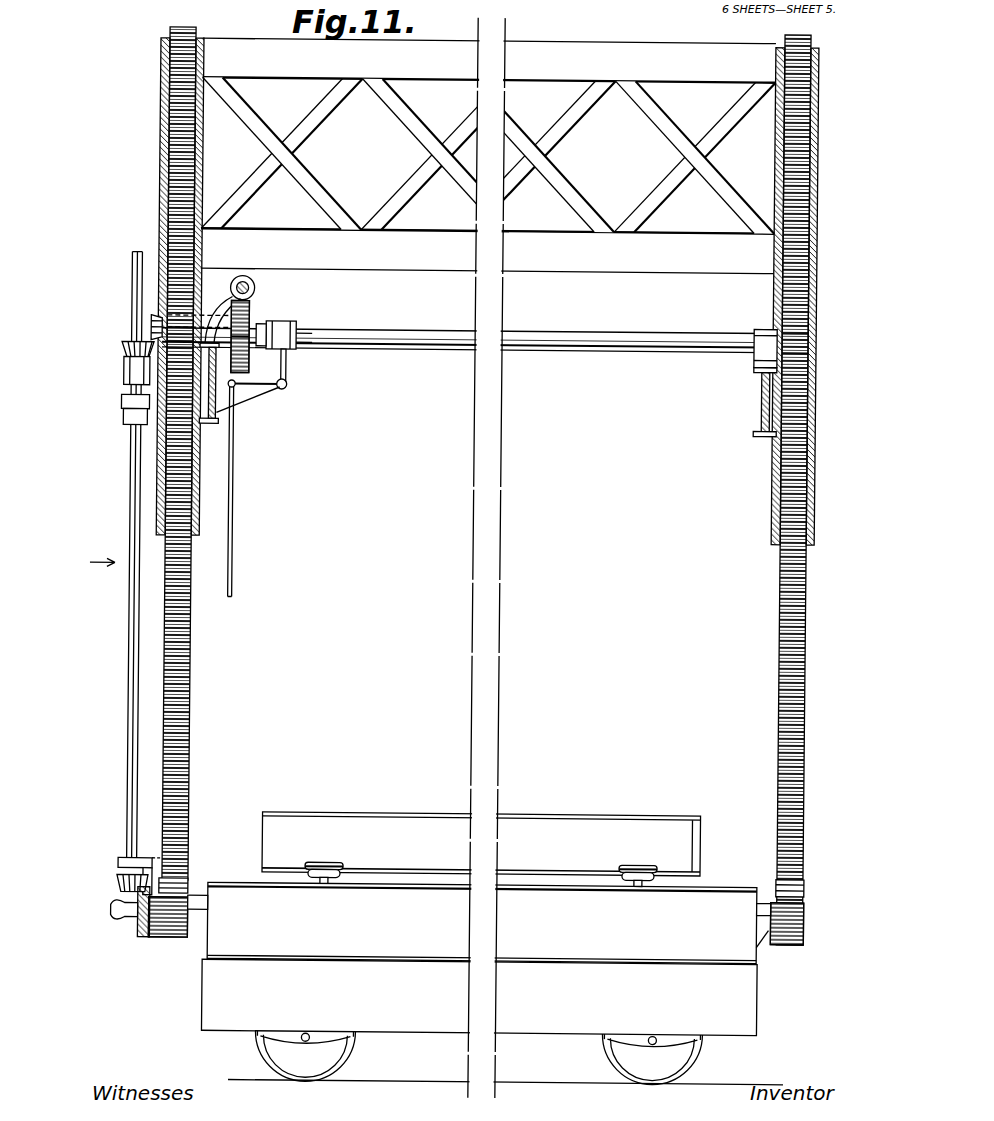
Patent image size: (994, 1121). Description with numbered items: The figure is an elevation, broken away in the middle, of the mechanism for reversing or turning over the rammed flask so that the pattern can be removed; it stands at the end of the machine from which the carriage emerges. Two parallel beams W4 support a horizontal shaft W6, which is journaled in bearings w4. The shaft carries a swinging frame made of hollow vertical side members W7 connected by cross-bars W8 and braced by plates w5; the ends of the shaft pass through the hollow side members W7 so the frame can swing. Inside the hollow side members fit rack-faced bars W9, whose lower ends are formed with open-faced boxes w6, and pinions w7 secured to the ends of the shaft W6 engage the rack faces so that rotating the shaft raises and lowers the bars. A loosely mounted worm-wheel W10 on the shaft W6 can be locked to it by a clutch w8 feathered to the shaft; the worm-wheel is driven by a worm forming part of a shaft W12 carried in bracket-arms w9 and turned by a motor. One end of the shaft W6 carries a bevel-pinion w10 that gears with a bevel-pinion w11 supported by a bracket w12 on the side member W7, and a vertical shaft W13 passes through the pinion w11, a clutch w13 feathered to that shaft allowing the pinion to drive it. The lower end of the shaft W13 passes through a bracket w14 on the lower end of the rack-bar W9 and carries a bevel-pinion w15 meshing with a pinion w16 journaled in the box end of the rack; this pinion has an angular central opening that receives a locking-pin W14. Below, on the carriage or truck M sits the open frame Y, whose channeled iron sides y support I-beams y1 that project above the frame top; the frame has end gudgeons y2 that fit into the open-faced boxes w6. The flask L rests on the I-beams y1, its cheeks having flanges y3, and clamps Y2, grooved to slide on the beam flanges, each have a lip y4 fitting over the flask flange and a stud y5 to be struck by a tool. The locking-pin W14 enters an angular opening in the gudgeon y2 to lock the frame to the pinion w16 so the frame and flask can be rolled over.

The cross-bars W8 is at (600, 245).
The plates w5 is at (488, 155).
The rack-faced bars W9 is at (193, 631).
The hollow vertical side members W7 is at (152, 146).
The horizontal shaft W6 is at (611, 331).
The pinions w7 is at (833, 313).
The vertical shaft W13 is at (130, 621).
The shaft W12 is at (239, 282).
The bracket-arms w9 is at (226, 300).
The worm-wheel W10 is at (247, 366).
The parallel beams W4 is at (230, 425).
The bearings w4 is at (266, 318).
The clutch w8 is at (292, 318).
The bevel-pinion w10 is at (148, 327).
The bevel-pinion w11 is at (130, 348).
The bracket w12 is at (128, 368).
The clutch w13 is at (120, 408).
The flask L is at (481, 844).
The flanges y3 is at (710, 867).
The open frame Y is at (482, 922).
The channeled iron sides y is at (780, 957).
The carriage M is at (479, 997).
The lip y4 is at (315, 865).
The stud y5 is at (323, 865).
The clamps Y2 is at (343, 868).
The I-beams y1 is at (640, 880).
The open-faced boxes w6 is at (187, 882).
The gudgeons y2 is at (817, 900).
The bracket w14 is at (127, 862).
The bevel-pinion w15 is at (117, 885).
The pinion w16 is at (140, 932).
The locking-pin W14 is at (113, 915).